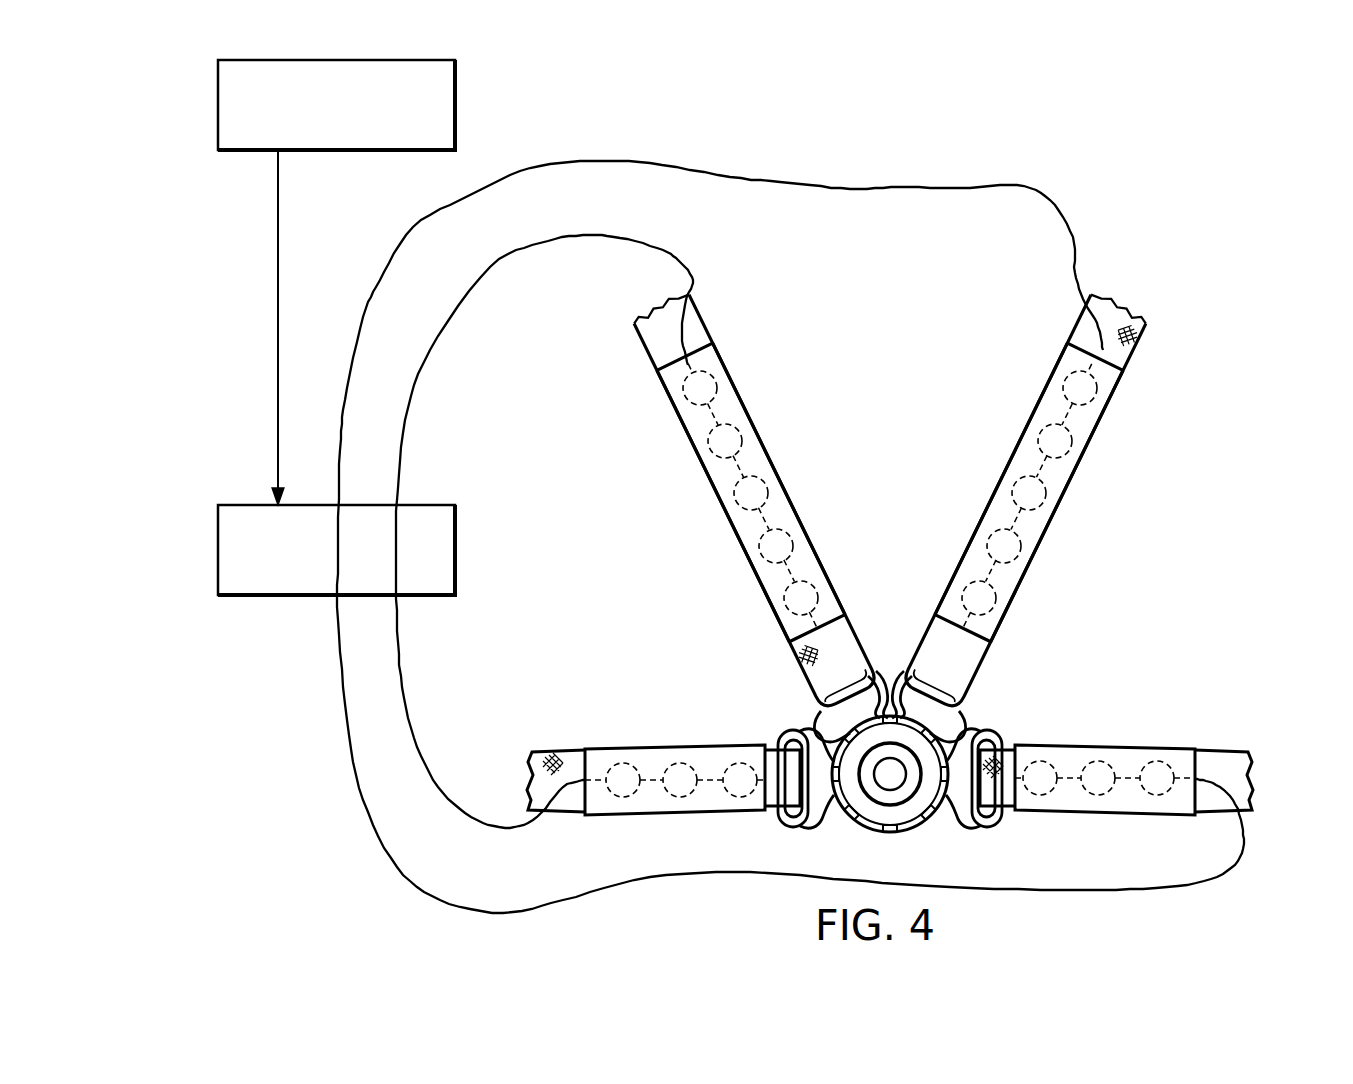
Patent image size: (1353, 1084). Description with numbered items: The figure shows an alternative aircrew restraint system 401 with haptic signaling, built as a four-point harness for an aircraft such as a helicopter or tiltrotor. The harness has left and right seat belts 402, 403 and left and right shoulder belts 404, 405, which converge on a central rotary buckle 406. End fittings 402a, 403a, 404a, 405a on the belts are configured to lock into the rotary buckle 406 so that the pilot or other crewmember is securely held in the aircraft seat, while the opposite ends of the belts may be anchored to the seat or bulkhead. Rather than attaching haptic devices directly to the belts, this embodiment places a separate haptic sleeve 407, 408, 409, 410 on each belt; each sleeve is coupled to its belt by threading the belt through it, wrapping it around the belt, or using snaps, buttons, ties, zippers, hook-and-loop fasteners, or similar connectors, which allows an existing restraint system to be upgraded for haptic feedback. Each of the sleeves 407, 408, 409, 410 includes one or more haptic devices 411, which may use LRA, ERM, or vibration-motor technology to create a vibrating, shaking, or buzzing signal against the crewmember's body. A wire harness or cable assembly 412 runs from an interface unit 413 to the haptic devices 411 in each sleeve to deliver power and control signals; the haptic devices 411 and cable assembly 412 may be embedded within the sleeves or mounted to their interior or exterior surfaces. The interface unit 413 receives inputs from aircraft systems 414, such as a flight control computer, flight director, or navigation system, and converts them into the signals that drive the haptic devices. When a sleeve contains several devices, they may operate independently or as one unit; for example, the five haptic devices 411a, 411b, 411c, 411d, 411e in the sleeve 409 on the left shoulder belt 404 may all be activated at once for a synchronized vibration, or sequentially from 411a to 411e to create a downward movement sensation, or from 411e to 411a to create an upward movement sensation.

The aircrew restraint system 401 is at (1213, 290).
The right seat belt 402 is at (1228, 750).
The end fitting 402a is at (1000, 815).
The left seat belt 403 is at (565, 748).
The end fitting 403a is at (778, 742).
The left shoulder belt 404 is at (1140, 340).
The end fitting 404a is at (985, 710).
The right shoulder belt 405 is at (703, 322).
The end fitting 405a is at (880, 690).
The rotary buckle 406 is at (852, 830).
The haptic sleeve 407 is at (1128, 815).
The haptic sleeve 408 is at (610, 815).
The haptic sleeve 409 is at (1012, 450).
The haptic sleeve 410 is at (745, 398).
The haptic device 411 is at (722, 500).
The haptic device 411a is at (1110, 385).
The haptic device 411b is at (1085, 440).
The haptic device 411c is at (1058, 493).
The haptic device 411d is at (1032, 545).
The haptic device 411e is at (1007, 598).
The cable assembly 412 is at (890, 188).
The interface unit 413 is at (218, 548).
The aircraft systems 414 is at (218, 105).